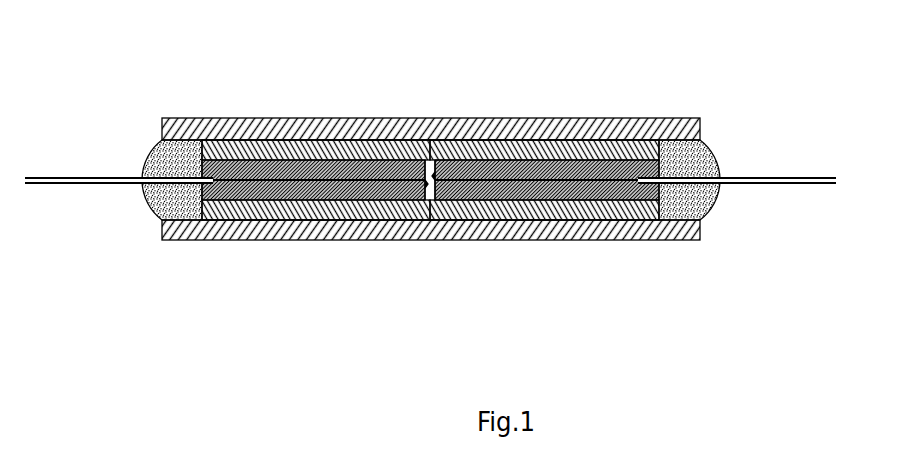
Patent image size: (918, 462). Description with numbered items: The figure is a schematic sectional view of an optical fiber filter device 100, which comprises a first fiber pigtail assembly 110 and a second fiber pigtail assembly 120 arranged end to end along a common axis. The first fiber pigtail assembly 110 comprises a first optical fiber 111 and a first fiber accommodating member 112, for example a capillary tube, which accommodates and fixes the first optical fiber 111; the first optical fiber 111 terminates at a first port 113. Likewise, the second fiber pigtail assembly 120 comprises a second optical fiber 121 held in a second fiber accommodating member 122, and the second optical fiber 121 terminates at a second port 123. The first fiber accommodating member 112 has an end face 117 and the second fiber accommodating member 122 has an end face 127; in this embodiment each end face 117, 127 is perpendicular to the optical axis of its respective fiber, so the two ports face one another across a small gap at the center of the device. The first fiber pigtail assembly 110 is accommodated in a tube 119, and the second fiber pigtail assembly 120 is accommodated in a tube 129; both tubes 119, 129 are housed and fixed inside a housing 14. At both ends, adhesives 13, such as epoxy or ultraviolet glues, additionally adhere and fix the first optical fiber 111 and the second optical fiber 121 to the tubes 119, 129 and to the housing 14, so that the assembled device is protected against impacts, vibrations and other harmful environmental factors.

The optical fiber filter device 100 is at (430, 158).
The first fiber pigtail assembly 110 is at (215, 183).
The first optical fiber 111 is at (241, 170).
The first fiber accommodating member 112 is at (280, 172).
The first port 113 is at (425, 178).
The end face 117 is at (422, 198).
The tube 119 is at (309, 217).
The second fiber pigtail assembly 120 is at (642, 188).
The second optical fiber 121 is at (572, 176).
The second fiber accommodating member 122 is at (522, 175).
The second port 123 is at (465, 228).
The end face 127 is at (437, 168).
The tube 129 is at (544, 218).
The adhesives 13 is at (149, 212).
The housing 14 is at (431, 211).